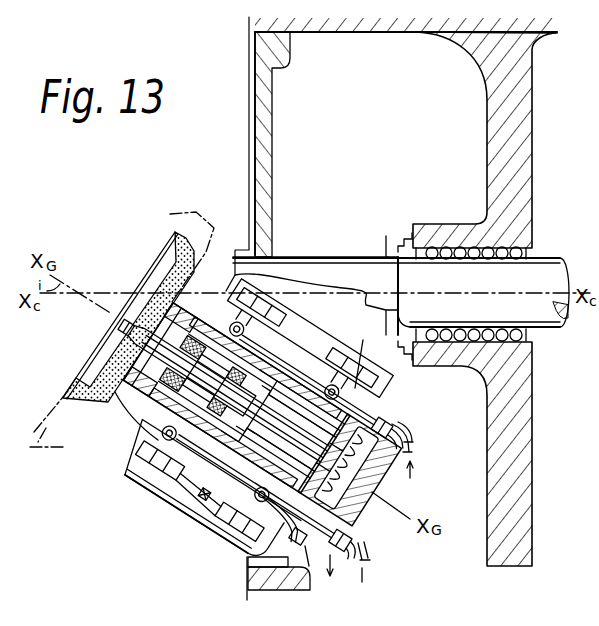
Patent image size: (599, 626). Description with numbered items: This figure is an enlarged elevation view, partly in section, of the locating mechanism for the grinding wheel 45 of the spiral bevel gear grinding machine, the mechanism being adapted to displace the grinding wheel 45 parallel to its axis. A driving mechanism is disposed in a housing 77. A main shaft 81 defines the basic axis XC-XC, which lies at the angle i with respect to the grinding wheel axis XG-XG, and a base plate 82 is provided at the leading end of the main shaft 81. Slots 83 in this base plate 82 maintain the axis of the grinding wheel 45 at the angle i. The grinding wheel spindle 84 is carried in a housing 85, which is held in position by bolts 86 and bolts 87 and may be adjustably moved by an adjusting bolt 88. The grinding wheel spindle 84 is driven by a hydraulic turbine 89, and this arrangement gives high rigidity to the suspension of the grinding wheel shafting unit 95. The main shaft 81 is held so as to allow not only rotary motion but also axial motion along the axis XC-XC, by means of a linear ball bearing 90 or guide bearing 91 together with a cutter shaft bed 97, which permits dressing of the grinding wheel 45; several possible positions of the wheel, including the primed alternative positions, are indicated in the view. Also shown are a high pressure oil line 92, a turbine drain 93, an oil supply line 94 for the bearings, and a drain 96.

The grinding wheel 45 is at (174, 230).
The housing 77 is at (518, 438).
The main shaft 81 is at (247, 24).
The base plate 82 is at (140, 466).
The slots 83 is at (166, 492).
The grinding wheel spindle 84 is at (130, 330).
The housing of grinding wheel spindle 85 is at (190, 464).
The bolts 86 is at (162, 438).
The bolts 87 is at (248, 328).
The adjusting bolt 88 is at (214, 512).
The hydraulic turbine 89 is at (372, 486).
The linear ball bearing 90 is at (508, 254).
The guide bearing 91 is at (302, 37).
The high pressure oil line 92 is at (400, 421).
The turbine drain 93 is at (372, 546).
The oil supply line 94 is at (422, 452).
The grinding wheel shafting unit 95 is at (152, 416).
The drain 96 is at (382, 560).
The cutter shaft bed 97 is at (354, 262).